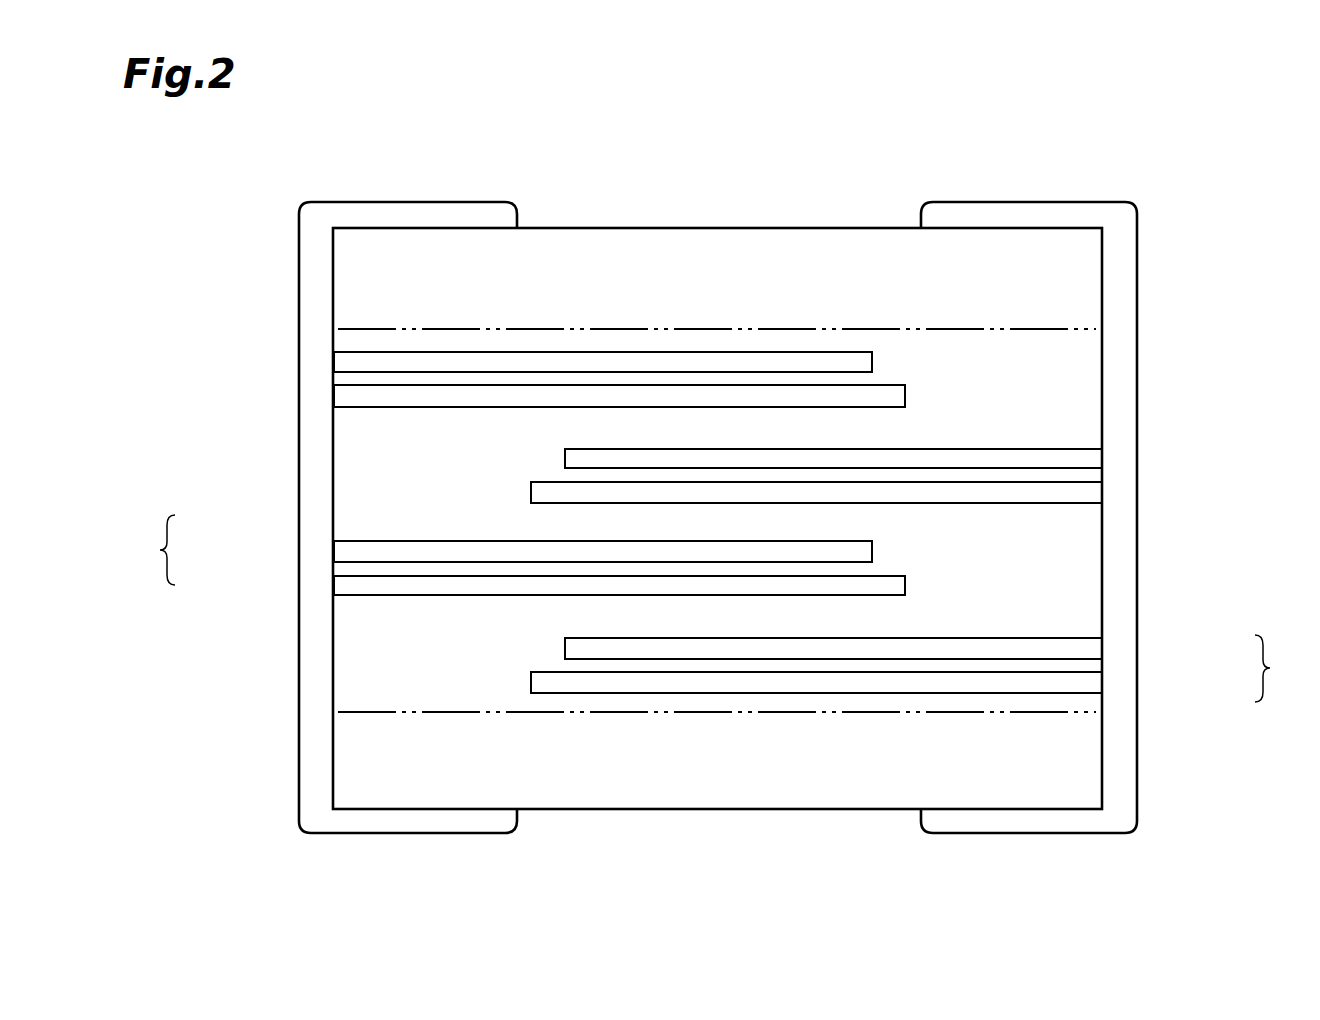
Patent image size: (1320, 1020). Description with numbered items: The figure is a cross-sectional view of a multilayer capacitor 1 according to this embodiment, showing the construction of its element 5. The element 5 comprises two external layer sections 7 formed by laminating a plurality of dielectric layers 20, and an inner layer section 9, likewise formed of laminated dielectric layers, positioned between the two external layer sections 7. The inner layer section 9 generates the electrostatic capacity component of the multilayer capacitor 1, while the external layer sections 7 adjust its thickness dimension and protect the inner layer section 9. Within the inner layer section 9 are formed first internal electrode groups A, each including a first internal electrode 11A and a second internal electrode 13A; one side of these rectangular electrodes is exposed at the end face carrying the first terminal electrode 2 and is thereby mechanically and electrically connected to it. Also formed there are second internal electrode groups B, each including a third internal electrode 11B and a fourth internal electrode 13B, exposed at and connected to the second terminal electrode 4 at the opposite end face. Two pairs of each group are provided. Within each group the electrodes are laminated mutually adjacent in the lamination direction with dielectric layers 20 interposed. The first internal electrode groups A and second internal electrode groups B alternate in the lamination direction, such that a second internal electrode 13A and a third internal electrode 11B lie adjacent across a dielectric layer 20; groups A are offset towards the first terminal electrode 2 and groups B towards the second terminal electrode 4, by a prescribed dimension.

The multilayer capacitor 1 is at (1086, 128).
The first terminal electrode 2 is at (1025, 215).
The second terminal electrode 4 is at (411, 215).
The element 5 is at (732, 228).
The external layer section 7 is at (1082, 278).
The inner layer section 9 is at (1082, 387).
The dielectric layer 20 is at (1082, 578).
The first internal electrode 11A is at (1082, 683).
The second internal electrode 13A is at (1082, 650).
The third internal electrode 11B is at (345, 585).
The fourth internal electrode 13B is at (345, 552).
The first internal electrode group A is at (1275, 668).
The second internal electrode group B is at (152, 550).